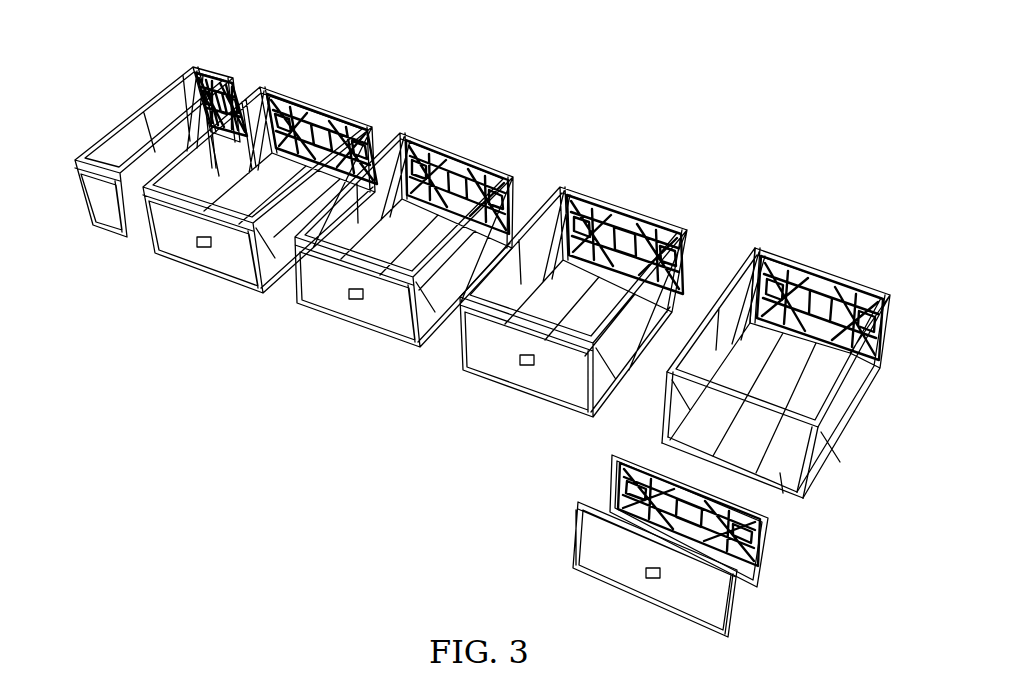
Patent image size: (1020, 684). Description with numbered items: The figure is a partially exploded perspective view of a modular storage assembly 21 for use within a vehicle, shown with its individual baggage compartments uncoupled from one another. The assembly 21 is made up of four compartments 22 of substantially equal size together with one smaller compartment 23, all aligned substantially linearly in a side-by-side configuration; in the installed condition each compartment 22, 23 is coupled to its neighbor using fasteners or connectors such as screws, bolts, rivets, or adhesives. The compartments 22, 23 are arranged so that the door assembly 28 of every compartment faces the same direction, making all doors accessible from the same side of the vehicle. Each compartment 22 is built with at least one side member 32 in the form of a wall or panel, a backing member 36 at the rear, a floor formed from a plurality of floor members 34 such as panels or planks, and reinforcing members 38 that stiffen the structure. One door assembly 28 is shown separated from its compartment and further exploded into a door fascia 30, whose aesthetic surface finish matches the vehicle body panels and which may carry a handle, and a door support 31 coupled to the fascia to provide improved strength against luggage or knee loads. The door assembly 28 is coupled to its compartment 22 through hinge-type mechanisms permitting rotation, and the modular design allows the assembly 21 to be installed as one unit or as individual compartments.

The assembly 21 is at (246, 474).
The compartment 22 is at (182, 242).
The smaller compartment 23 is at (103, 213).
The door assembly 28 is at (641, 563).
The door fascia 30 is at (590, 540).
The door support 31 is at (610, 475).
The side member 32 is at (791, 367).
The floor member 34 is at (787, 496).
The backing member 36 is at (577, 197).
The reinforcing member 38 is at (733, 272).